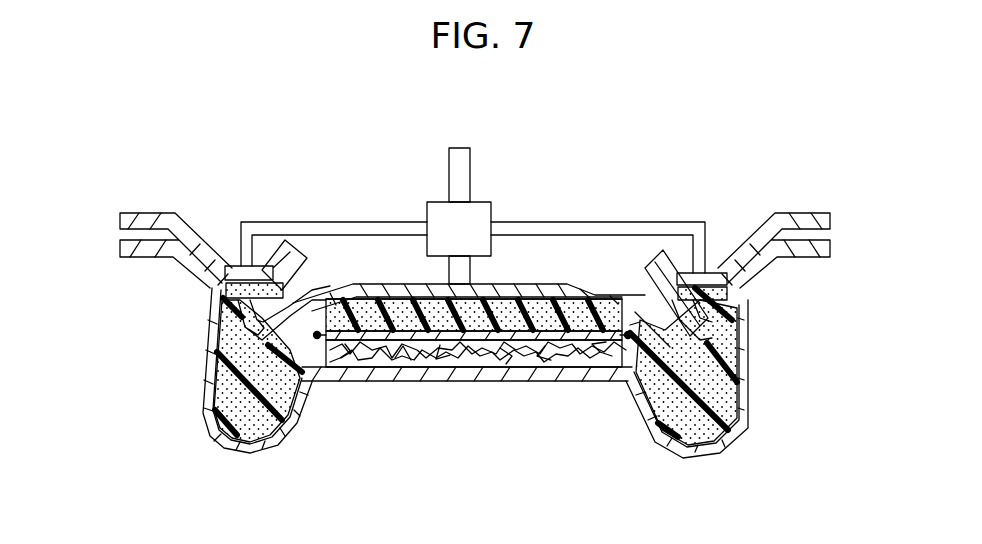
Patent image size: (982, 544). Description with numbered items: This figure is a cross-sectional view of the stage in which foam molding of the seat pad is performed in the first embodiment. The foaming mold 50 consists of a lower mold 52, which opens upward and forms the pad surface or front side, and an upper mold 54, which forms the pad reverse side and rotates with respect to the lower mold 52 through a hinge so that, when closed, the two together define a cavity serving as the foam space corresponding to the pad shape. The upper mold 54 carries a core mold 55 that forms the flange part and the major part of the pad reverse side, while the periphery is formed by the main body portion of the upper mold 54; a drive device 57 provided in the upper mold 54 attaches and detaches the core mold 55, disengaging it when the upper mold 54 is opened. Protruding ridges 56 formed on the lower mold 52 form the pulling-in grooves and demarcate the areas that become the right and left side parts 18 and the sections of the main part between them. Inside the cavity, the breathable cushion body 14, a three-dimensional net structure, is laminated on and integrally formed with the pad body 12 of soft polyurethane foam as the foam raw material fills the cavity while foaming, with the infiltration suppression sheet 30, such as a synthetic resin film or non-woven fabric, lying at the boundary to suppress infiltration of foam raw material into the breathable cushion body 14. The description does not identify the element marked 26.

The foaming mold 50 is at (474, 103).
The upper mold 54 is at (182, 220).
The protruding ridges 56 is at (685, 292).
The drive device 57 is at (492, 208).
The core mold 55 is at (360, 284).
The infiltration suppression sheet 30 is at (513, 297).
The pad body 12 is at (397, 313).
The breathable cushion body 14 is at (520, 358).
The lower mold 52 is at (380, 383).
The electrode tab 26 is at (628, 323).
The side parts 18 is at (255, 418).